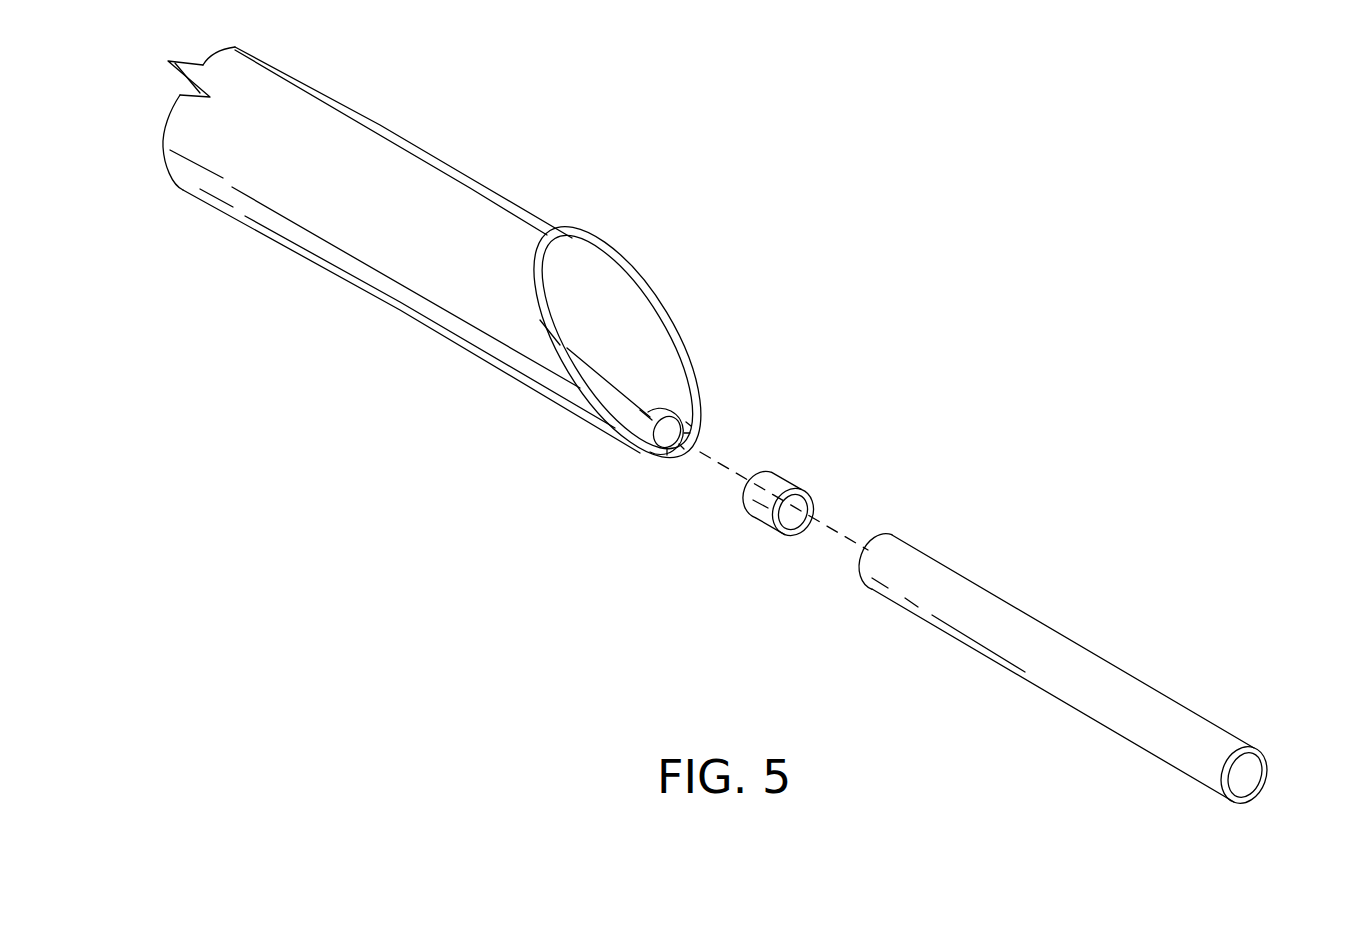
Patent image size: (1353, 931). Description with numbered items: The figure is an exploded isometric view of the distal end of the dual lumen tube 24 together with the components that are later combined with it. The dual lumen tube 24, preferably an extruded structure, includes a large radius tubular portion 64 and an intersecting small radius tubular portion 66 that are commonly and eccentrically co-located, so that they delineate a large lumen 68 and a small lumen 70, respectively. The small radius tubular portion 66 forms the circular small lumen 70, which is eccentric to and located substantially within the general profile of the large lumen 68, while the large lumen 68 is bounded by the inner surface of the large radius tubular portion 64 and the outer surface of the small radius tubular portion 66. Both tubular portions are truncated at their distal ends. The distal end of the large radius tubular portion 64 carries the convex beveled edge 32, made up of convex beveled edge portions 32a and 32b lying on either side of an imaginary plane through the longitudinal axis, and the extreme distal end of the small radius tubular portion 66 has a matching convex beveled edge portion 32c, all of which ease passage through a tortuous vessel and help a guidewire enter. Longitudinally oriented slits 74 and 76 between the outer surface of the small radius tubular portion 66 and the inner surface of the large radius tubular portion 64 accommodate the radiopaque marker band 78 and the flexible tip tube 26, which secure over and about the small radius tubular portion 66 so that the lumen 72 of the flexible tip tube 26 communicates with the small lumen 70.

The dual lumen tube 24 is at (480, 177).
The flexible tip tube 26 is at (986, 607).
The convex beveled edge 32 is at (677, 354).
The convex beveled edge portion 32a is at (647, 302).
The convex beveled edge portion 32b is at (552, 332).
The convex beveled edge portion 32c is at (650, 417).
The large radius tubular portion 64 is at (613, 267).
The small radius tubular portion 66 is at (650, 417).
The large lumen 68 is at (623, 358).
The small lumen 70 is at (667, 433).
The lumen 72 is at (1243, 778).
The longitudinally oriented slit 74 is at (665, 442).
The longitudinally oriented slit 76 is at (688, 438).
The radiopaque marker band 78 is at (778, 482).